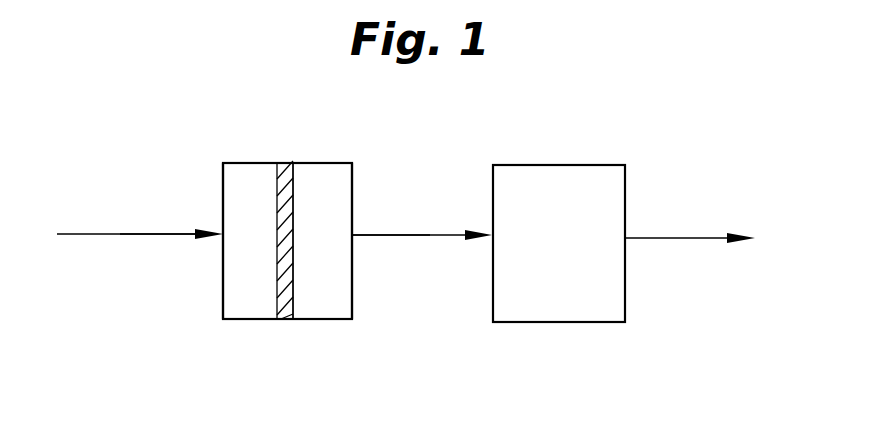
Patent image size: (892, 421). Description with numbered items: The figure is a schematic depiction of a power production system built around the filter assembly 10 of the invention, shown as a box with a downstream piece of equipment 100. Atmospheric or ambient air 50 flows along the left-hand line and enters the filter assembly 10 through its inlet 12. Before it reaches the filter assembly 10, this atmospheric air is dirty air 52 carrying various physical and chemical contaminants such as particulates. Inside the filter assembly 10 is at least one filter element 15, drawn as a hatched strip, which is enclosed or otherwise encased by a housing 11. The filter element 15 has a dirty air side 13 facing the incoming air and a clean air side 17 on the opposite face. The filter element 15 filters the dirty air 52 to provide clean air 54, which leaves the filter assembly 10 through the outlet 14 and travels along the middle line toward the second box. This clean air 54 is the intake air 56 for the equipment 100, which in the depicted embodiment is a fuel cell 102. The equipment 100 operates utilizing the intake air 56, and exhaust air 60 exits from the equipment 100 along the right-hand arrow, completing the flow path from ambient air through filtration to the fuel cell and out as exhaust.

The filter assembly 10 is at (281, 150).
The housing 11 is at (246, 163).
The inlet 12 is at (222, 233).
The dirty air side 13 is at (277, 283).
The outlet 14 is at (353, 233).
The filter element 15 is at (288, 319).
The clean air side 17 is at (293, 283).
The atmospheric air 50 is at (110, 237).
The dirty air 52 is at (177, 237).
The clean air 54 is at (404, 236).
The intake air 56 is at (430, 235).
The exhaust air 60 is at (688, 240).
The equipment 100 is at (528, 165).
The fuel cell 102 is at (613, 165).